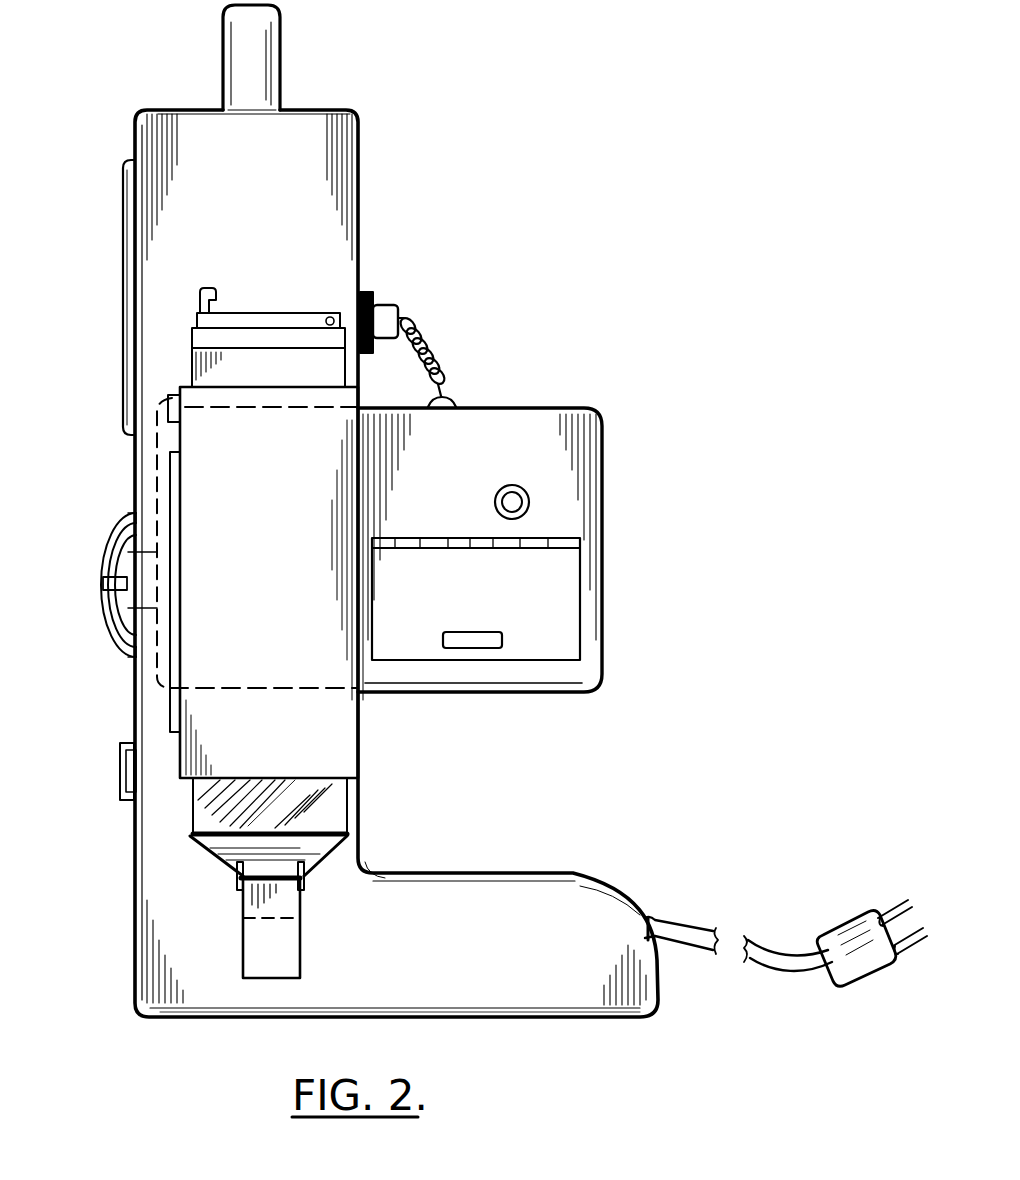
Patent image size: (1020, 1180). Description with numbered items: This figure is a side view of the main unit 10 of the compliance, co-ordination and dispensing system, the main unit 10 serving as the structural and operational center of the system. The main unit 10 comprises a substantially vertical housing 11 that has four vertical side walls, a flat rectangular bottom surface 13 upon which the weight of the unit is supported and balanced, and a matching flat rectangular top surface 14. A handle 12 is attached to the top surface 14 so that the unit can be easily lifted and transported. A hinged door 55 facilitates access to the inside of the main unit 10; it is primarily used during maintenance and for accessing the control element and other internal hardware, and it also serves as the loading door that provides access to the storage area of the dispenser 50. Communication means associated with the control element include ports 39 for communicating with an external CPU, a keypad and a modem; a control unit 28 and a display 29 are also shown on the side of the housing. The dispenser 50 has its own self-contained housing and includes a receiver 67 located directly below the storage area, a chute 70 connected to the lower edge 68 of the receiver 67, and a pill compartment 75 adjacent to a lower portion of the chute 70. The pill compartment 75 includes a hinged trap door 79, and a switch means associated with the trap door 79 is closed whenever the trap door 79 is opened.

The main unit 10 is at (103, 137).
The vertical housing 11 is at (110, 232).
The handle 12 is at (265, 47).
The bottom surface 13 is at (520, 1019).
The top surface 14 is at (200, 108).
The control unit 28 is at (585, 522).
The display 29 is at (565, 603).
The ports 39 is at (505, 486).
The dispenser 50 is at (168, 440).
The hinged access door 55 is at (237, 322).
The receiver 67 is at (202, 806).
The lower edge 68 is at (193, 836).
The chute 70 is at (232, 856).
The pill compartment 75 is at (285, 905).
The trap door 79 is at (285, 945).